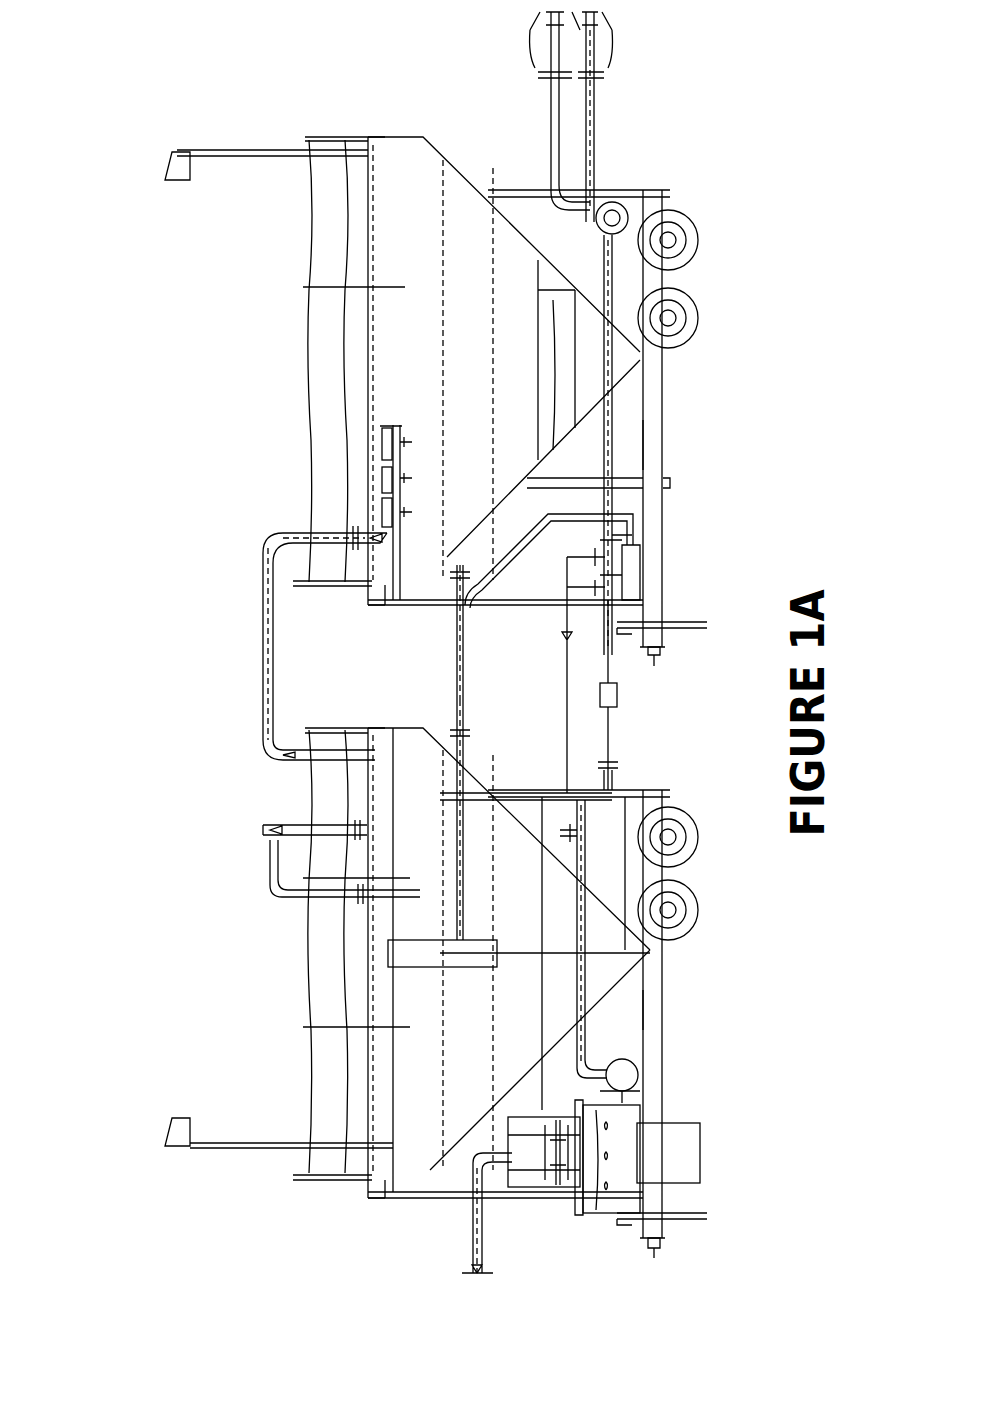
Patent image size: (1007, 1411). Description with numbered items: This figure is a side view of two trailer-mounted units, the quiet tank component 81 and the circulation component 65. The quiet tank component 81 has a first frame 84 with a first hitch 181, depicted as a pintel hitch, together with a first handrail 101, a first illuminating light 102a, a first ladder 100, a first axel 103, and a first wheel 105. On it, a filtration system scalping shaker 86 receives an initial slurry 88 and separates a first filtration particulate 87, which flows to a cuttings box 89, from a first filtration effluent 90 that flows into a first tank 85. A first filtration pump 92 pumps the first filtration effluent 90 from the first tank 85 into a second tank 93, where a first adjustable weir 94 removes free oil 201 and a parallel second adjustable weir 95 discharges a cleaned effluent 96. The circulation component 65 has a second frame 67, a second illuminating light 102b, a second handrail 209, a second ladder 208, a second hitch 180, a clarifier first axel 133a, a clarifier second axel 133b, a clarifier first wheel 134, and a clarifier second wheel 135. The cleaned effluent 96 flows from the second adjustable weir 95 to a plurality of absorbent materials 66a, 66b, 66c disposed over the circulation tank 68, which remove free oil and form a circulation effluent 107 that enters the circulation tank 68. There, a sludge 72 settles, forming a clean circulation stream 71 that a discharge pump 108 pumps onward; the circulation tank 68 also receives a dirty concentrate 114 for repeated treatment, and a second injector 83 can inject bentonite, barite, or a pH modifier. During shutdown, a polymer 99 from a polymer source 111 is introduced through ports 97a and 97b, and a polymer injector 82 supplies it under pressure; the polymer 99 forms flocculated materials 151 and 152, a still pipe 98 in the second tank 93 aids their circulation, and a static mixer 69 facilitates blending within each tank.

The circulation component 65 is at (207, 105).
The quiet tank component 81 is at (205, 1215).
The second handrail 209 is at (322, 282).
The first handrail 101 is at (320, 1027).
The first illuminating light 102a is at (165, 1148).
The second illuminating light 102b is at (165, 162).
The circulation tank 68 is at (378, 135).
The second tank 93 is at (425, 728).
The sludge 72 is at (545, 369).
The clean circulation stream 71 is at (551, 125).
The dirty concentrate 114 is at (594, 125).
The discharge pump 108 is at (615, 203).
The flocculated material 152 is at (612, 513).
The clarifier first axel 133a is at (701, 316).
The clarifier second axel 133b is at (678, 218).
The clarifier first wheel 134 is at (698, 333).
The clarifier second wheel 135 is at (698, 237).
The second frame 67 is at (662, 448).
The absorbent material 66a is at (382, 514).
The absorbent material 66b is at (382, 480).
The absorbent material 66c is at (383, 450).
The circulation effluent 107 is at (412, 436).
The second injector 83 is at (527, 534).
The polymer injector 82 is at (640, 586).
The second hitch 180 is at (660, 658).
The first hitch 181 is at (652, 1253).
The second ladder 208 is at (385, 605).
The first ladder 100 is at (385, 1200).
The cleaned effluent 96 is at (263, 652).
The second adjustable weir 95 is at (273, 687).
The free oil 201 is at (293, 829).
The first adjustable weir 94 is at (278, 886).
The port 97a is at (465, 712).
The port 97b is at (455, 593).
The still pipe 98 is at (470, 967).
The polymer 99 is at (567, 685).
The polymer source 111 is at (573, 812).
The static mixer 69 is at (617, 695).
The flocculated material 151 is at (612, 773).
The first axel 103 is at (672, 797).
The first wheel 105 is at (702, 828).
The first frame 84 is at (662, 1004).
The first filtration pump 92 is at (637, 1079).
The cuttings box 89 is at (700, 1145).
The first tank 85 is at (590, 1213).
The first filtration effluent 90 is at (602, 1172).
The filtration system scalping shaker 86 is at (532, 1185).
The first filtration particulate 87 is at (554, 1187).
The initial slurry 88 is at (472, 1237).